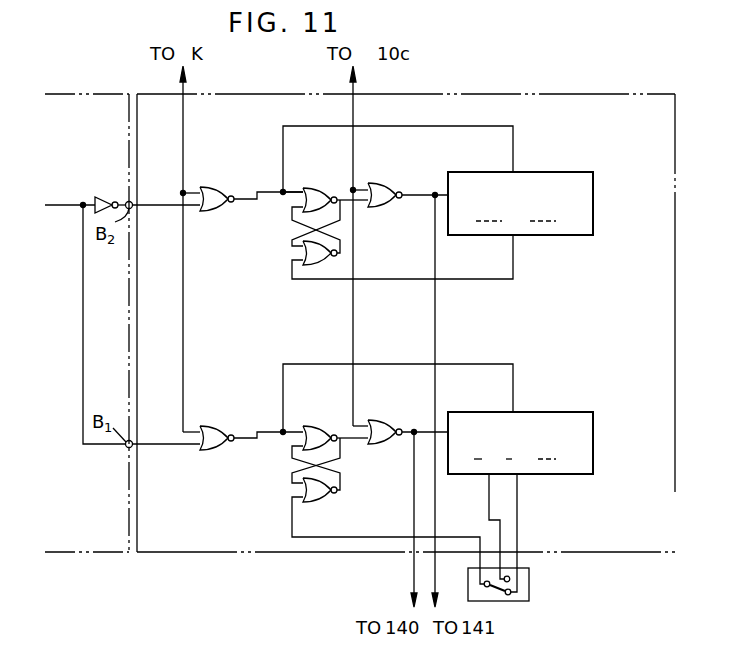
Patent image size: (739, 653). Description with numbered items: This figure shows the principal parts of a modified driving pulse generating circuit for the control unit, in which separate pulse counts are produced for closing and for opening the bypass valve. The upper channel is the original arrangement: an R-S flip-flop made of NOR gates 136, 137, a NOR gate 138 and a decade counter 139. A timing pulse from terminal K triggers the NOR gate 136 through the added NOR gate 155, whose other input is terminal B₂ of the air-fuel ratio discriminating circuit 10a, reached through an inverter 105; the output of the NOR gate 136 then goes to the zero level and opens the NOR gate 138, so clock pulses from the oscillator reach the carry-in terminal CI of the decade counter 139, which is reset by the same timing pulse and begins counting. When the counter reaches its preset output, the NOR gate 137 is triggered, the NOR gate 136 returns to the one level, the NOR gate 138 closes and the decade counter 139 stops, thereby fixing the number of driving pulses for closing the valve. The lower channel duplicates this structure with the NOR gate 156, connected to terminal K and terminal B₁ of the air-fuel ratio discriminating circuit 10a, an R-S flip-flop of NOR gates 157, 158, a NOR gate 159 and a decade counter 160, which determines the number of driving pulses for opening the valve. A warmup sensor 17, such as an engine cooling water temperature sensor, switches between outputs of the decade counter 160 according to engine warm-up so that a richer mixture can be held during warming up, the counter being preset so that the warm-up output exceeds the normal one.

The air-fuel ratio discriminating circuit 10a is at (62, 92).
The inverter 105 is at (103, 196).
The NOR gate 155 is at (209, 187).
The NOR gate 136 is at (312, 188).
The NOR gate 137 is at (316, 266).
The NOR gate 138 is at (374, 183).
The decade counter 139 is at (545, 172).
The NOR gate 156 is at (209, 427).
The NOR gate 157 is at (310, 427).
The NOR gate 158 is at (313, 498).
The NOR gate 159 is at (380, 420).
The decade counter 160 is at (478, 412).
The warmup sensor 17 is at (529, 583).